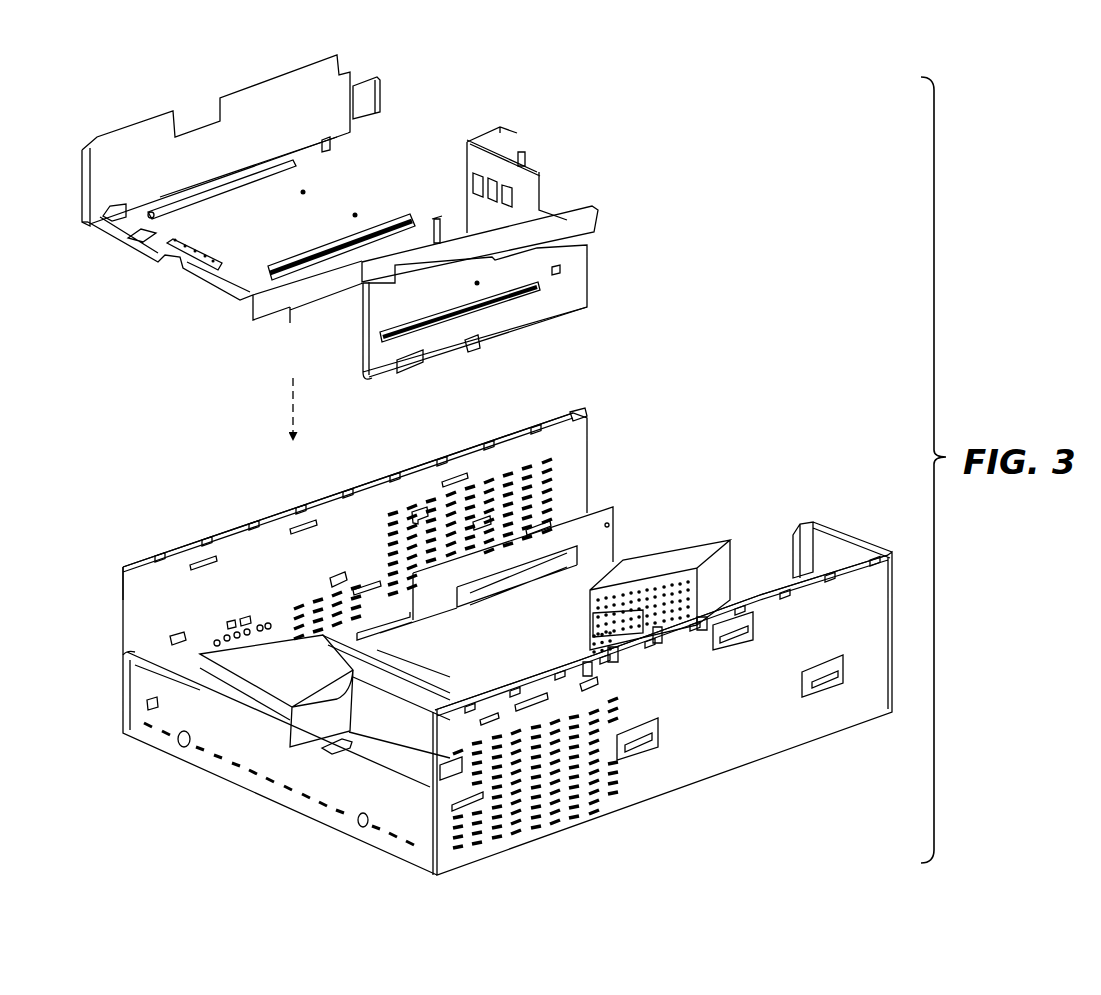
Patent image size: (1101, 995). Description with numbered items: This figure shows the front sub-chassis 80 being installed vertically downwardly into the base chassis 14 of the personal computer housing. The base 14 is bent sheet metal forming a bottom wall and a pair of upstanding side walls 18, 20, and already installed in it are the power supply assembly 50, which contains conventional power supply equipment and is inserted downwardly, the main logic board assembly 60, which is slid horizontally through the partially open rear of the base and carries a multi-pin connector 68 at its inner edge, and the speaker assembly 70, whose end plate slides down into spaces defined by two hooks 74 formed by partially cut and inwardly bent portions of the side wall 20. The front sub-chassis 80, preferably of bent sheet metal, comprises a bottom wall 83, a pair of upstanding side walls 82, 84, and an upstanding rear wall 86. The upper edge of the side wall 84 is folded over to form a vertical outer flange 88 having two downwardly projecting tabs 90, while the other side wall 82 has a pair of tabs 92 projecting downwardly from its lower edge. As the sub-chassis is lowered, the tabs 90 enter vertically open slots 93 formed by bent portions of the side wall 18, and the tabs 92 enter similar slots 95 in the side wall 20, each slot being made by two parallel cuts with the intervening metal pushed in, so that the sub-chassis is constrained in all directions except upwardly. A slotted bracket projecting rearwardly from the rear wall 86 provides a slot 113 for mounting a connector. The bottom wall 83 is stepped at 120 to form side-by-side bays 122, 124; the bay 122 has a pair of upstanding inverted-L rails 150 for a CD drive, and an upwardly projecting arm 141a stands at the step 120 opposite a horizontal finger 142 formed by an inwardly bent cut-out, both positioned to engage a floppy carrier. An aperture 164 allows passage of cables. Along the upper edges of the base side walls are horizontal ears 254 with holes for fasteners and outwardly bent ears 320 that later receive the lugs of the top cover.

The base chassis 14 is at (452, 442).
The side wall 18 is at (700, 767).
The side wall 20 is at (580, 458).
The power supply assembly 50 is at (700, 565).
The main logic board assembly 60 is at (648, 562).
The multi-pin connector 68 is at (390, 703).
The speaker assembly 70 is at (263, 697).
The hook 74 is at (130, 688).
The front sub-chassis 80 is at (248, 327).
The side wall 82 is at (165, 128).
The bottom wall 83 is at (263, 264).
The side wall 84 is at (580, 288).
The rear wall 86 is at (537, 192).
The vertical outer flange 88 is at (593, 230).
The tab 90 is at (542, 280).
The tab 92 is at (333, 147).
The slot 93 is at (600, 686).
The slot 95 is at (333, 573).
The slot 113 is at (382, 85).
The step 120 is at (270, 308).
The bay 122 is at (140, 262).
The bay 124 is at (322, 372).
The arm 141a is at (438, 221).
The horizontal finger 142 is at (556, 277).
The rail 150 is at (207, 197).
The aperture 164 is at (512, 195).
The horizontal ear 254 is at (605, 402).
The ear 320 is at (152, 558).